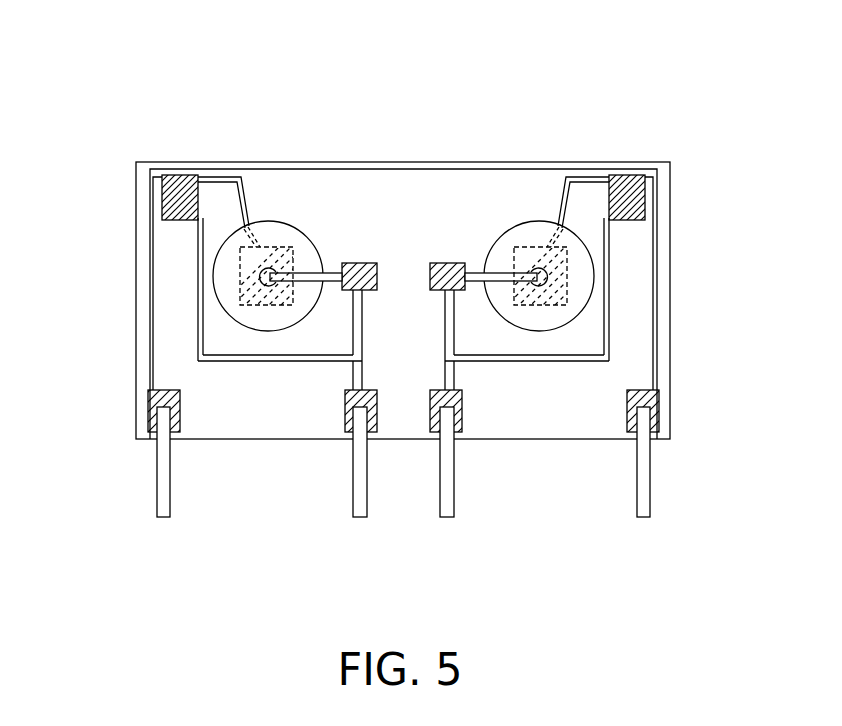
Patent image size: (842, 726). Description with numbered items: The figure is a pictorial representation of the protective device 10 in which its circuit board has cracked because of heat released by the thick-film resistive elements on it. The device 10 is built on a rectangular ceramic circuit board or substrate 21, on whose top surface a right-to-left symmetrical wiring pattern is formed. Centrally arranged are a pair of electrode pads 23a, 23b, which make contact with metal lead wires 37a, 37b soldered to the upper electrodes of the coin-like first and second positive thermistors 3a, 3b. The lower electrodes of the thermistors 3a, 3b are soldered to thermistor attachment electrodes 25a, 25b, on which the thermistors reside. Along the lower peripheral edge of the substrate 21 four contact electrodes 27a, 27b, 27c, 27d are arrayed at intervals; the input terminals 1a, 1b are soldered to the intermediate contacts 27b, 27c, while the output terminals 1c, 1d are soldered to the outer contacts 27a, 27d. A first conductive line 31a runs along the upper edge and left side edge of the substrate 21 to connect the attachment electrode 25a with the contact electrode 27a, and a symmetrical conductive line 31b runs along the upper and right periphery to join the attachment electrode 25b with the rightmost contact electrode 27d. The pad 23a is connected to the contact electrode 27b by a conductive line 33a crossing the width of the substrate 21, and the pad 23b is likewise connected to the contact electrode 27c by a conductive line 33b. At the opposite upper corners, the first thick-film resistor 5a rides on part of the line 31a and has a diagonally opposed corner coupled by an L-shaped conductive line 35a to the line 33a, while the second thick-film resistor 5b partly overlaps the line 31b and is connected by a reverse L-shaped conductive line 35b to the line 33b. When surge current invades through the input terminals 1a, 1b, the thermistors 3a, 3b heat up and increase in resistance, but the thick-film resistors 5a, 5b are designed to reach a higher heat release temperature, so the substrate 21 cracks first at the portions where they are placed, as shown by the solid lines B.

The protective device 10 is at (86, 34).
The circuit board or substrate 21 is at (393, 185).
The solid lines indicating crack B is at (151, 222).
The first thick-film resistive element 5a is at (146, 226).
The second thick-film resistive element 5b is at (642, 216).
The first conductive line 31a is at (150, 219).
The conductive line 31b is at (672, 238).
The L-shaped conductive line 35a is at (193, 315).
The reverse L-shaped conductive line 35b is at (607, 323).
The metal lead wire 37a is at (353, 292).
The metal lead wire 37b is at (454, 292).
The conductive line 33a is at (352, 378).
The conductive line 33b is at (452, 370).
The first metal wire contact pad 23a is at (364, 262).
The electrode pad 23b is at (444, 262).
The first positive thermistor 3a is at (226, 270).
The second positive thermistor 3b is at (580, 287).
The first positive-thermistor attachment electrode 25a is at (282, 246).
The positive-thermistor attachment electrode 25b is at (516, 246).
The terminal contact electrode 27a is at (151, 432).
The terminal contact electrode 27b is at (351, 432).
The terminal contact electrode 27c is at (457, 432).
The terminal contact electrode 27d is at (655, 404).
The input terminal 1a is at (360, 498).
The input terminal 1b is at (448, 498).
The output terminal 1c is at (162, 498).
The output terminal 1d is at (643, 503).